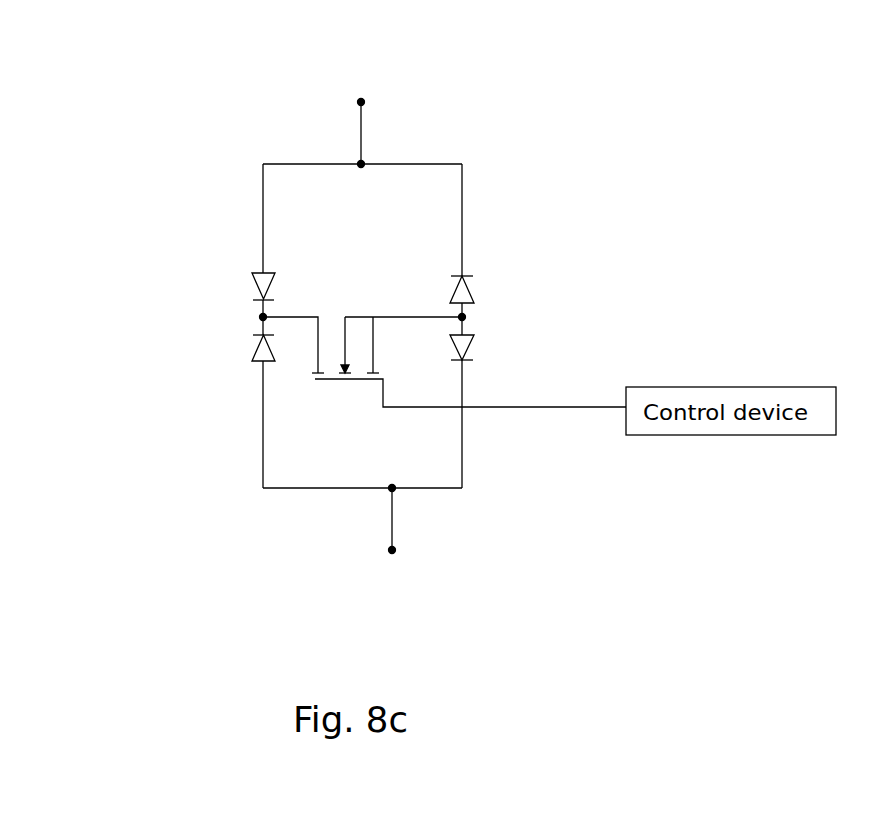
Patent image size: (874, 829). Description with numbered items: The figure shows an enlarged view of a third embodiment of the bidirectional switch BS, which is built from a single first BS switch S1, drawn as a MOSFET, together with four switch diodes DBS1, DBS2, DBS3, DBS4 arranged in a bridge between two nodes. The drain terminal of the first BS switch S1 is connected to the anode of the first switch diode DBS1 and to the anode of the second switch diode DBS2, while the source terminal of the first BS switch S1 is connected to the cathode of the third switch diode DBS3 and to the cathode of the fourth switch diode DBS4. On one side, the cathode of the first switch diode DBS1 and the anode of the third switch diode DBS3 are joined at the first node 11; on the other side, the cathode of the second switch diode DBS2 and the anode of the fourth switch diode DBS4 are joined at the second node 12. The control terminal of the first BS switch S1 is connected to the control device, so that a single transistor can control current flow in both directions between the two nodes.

The first node 11 is at (332, 132).
The second node 12 is at (367, 532).
The bidirectional switch BS is at (155, 119).
The first BS switch S1 is at (444, 343).
The first switch diode DBS1 is at (498, 289).
The second switch diode DBS2 is at (492, 360).
The third switch diode DBS3 is at (228, 288).
The fourth switch diode DBS4 is at (228, 351).